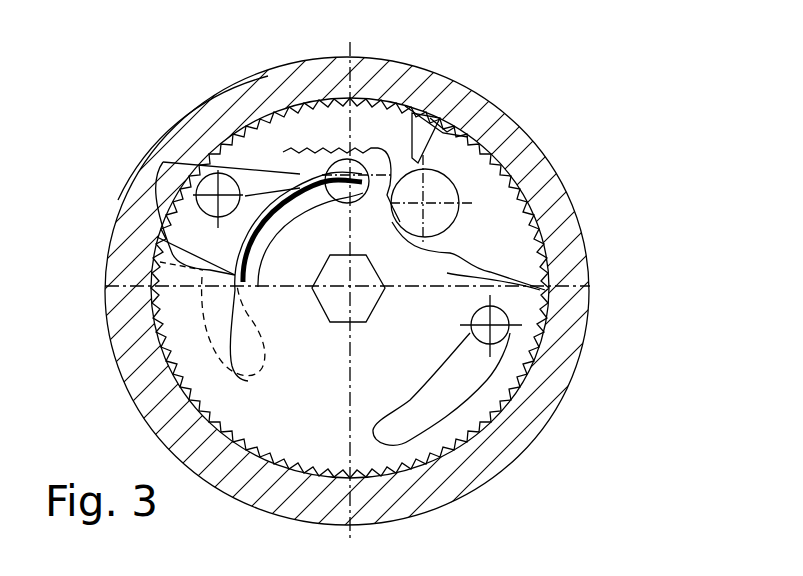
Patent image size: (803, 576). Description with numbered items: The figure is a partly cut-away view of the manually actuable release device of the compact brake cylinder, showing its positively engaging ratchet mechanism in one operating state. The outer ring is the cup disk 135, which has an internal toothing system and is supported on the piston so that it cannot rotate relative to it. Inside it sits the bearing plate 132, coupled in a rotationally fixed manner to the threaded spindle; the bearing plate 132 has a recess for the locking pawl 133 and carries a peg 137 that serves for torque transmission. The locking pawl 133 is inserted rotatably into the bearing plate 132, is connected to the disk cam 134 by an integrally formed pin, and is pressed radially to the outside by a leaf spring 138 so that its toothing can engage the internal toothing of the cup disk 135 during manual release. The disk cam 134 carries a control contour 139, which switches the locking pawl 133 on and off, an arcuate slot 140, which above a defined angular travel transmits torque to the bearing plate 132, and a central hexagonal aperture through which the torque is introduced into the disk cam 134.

The bearing plate 132 is at (498, 230).
The locking pawl 133 is at (393, 139).
The disk cam 134 is at (447, 272).
The cup disk 135 is at (497, 119).
The peg 137 is at (503, 326).
The leaf spring 138 is at (258, 237).
The control contour 139 is at (290, 155).
The arcuate slot 140 is at (487, 382).